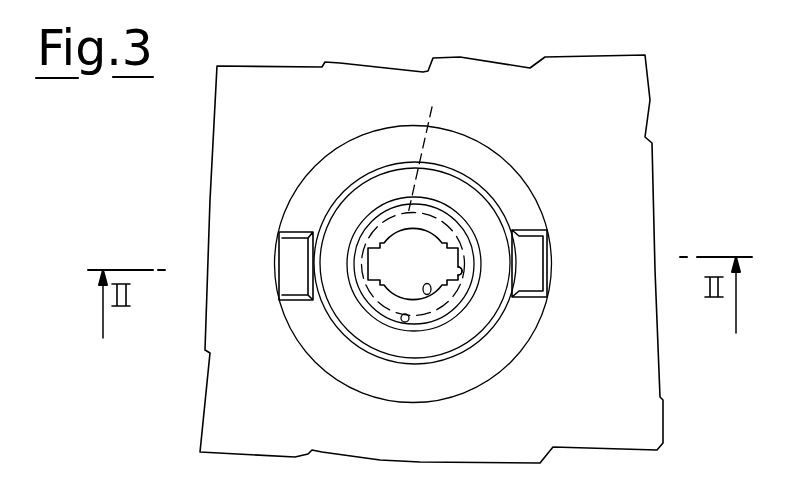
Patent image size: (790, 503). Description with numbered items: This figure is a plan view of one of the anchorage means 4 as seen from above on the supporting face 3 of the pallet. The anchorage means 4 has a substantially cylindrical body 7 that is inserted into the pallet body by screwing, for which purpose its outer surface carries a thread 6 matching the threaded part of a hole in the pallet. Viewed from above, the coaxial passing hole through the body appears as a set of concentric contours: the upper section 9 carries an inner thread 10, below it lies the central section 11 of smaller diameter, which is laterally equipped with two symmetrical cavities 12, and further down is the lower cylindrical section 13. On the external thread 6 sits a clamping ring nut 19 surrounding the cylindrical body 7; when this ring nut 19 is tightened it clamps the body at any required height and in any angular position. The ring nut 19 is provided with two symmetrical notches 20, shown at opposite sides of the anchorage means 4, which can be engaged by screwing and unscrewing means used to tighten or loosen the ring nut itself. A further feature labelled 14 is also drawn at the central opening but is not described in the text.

The supporting face 3 is at (630, 168).
The anchorage means 4 is at (500, 196).
The thread 6 is at (370, 357).
The cylindrical body 7 is at (467, 332).
The upper section 9 is at (404, 322).
The inner thread 10 is at (367, 300).
The central section 11 is at (433, 293).
The symmetrical cavities 12 is at (369, 247).
The lower cylindrical section 13 is at (433, 150).
The notch 14 is at (463, 278).
The clamping ring nut 19 is at (532, 351).
The symmetrical notches 20 is at (294, 282).